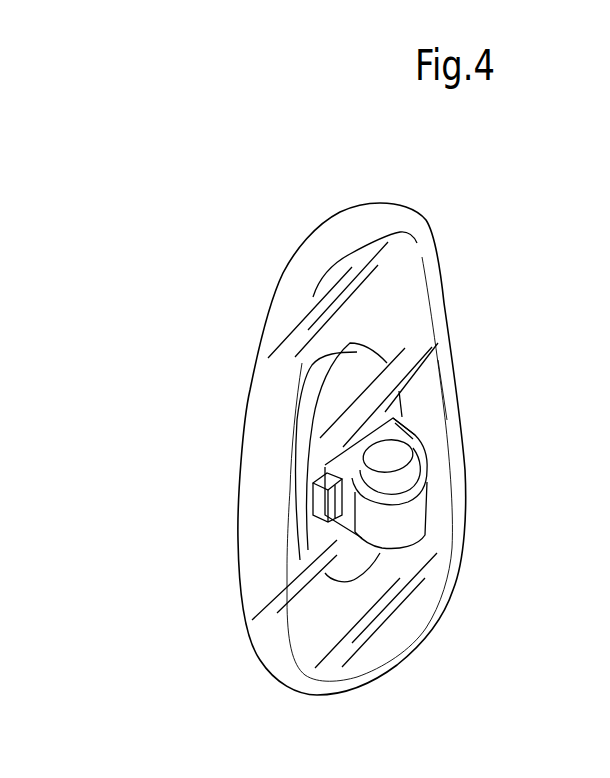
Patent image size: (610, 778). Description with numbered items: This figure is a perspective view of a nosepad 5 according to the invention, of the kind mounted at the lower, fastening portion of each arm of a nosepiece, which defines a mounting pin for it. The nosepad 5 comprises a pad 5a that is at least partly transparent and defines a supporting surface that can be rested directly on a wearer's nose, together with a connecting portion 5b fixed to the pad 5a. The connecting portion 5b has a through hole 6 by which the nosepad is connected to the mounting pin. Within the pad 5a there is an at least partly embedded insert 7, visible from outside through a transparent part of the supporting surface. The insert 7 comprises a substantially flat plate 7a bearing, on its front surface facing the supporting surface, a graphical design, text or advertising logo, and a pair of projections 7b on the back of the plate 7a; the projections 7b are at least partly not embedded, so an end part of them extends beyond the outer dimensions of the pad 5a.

The nosepad 5 is at (315, 227).
The pad 5a is at (412, 604).
The connecting portion 5b is at (412, 513).
The through hole 6 is at (388, 462).
The insert 7 is at (376, 356).
The plate 7a is at (350, 380).
The projections 7b is at (415, 435).